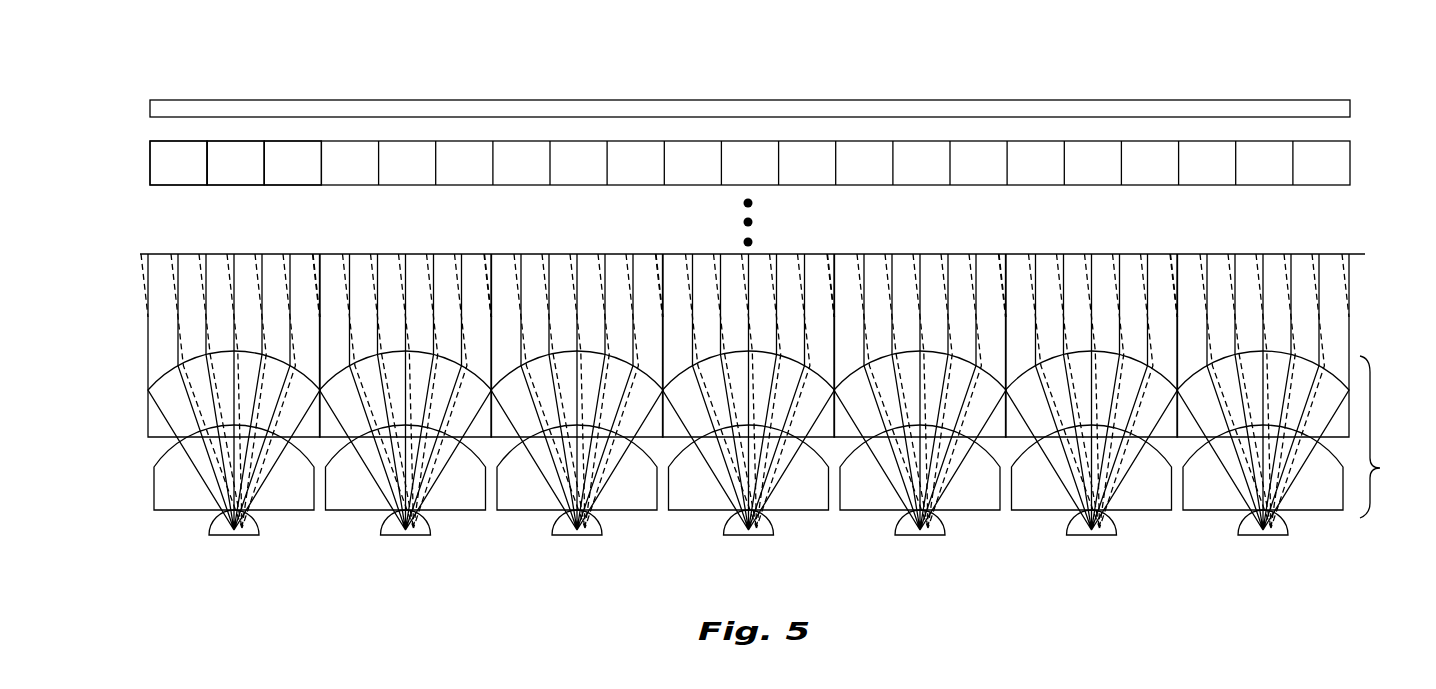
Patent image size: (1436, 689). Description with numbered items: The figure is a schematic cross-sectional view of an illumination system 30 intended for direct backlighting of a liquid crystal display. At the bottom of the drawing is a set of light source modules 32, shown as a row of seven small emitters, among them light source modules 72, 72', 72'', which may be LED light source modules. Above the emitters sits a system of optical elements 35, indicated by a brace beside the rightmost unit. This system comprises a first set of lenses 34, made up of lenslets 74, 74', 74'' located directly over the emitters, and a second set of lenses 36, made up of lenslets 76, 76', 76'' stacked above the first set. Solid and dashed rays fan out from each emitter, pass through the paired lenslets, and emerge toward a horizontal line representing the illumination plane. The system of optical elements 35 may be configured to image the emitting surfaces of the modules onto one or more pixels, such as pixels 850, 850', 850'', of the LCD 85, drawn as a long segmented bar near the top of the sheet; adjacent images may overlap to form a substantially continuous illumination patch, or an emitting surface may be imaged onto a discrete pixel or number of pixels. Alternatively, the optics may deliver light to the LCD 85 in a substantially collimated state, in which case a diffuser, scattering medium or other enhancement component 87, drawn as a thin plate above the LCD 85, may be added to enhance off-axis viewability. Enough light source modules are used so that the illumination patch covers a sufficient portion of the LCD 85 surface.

The illumination system 30 is at (751, 434).
The set of light source modules 32 is at (692, 554).
The first set of lenses 34 is at (712, 496).
The system of optical elements 35 is at (1298, 434).
The second set of lenses 36 is at (715, 482).
The light source module 72 is at (223, 554).
The light source module 72' is at (394, 554).
The light source module 72'' is at (564, 554).
The lenslet 74 is at (234, 496).
The lenslet 74' is at (406, 496).
The lenslet 74'' is at (577, 496).
The lenslet 76 is at (234, 482).
The lenslet 76' is at (413, 478).
The lenslet 76'' is at (585, 479).
The LCD 85 is at (1352, 165).
The enhancement component 87 is at (1352, 110).
The pixel 850 is at (686, 163).
The pixel 850' is at (207, 121).
The pixel 850'' is at (277, 116).